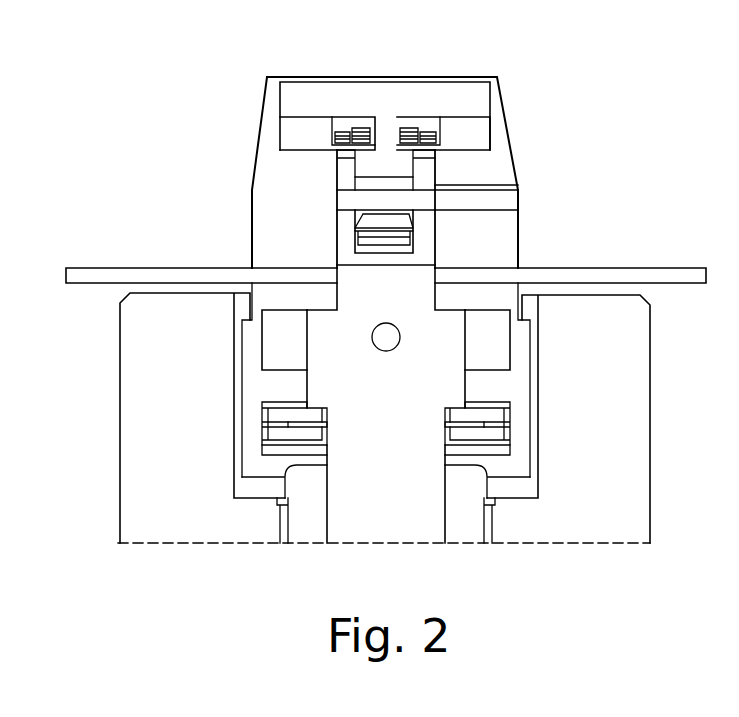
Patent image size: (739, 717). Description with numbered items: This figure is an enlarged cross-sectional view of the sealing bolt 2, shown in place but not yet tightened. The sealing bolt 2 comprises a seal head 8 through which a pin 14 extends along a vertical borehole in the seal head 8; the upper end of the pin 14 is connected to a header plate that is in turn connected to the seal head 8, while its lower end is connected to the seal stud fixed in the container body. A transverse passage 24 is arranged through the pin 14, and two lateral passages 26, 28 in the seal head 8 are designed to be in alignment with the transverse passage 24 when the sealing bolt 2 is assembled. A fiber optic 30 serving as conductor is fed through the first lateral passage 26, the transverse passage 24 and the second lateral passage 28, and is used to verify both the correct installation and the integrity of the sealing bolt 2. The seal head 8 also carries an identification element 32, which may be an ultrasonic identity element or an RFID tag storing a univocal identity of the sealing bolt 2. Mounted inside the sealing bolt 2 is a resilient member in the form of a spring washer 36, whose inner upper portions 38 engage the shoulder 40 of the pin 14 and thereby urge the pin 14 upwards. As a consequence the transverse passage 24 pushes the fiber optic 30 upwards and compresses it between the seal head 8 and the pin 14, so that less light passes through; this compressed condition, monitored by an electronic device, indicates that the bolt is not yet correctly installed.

The sealing bolt 2 is at (240, 112).
The seal head 8 is at (505, 232).
The pin 14 is at (340, 348).
The transverse passage 24 is at (422, 263).
The first lateral passage 26 is at (282, 266).
The second lateral passage 28 is at (497, 268).
The fiber optic 30 is at (105, 268).
The identification element 32 is at (388, 188).
The spring washer 36 is at (500, 417).
The inner upper portions 38 is at (458, 433).
The shoulder 40 is at (453, 405).